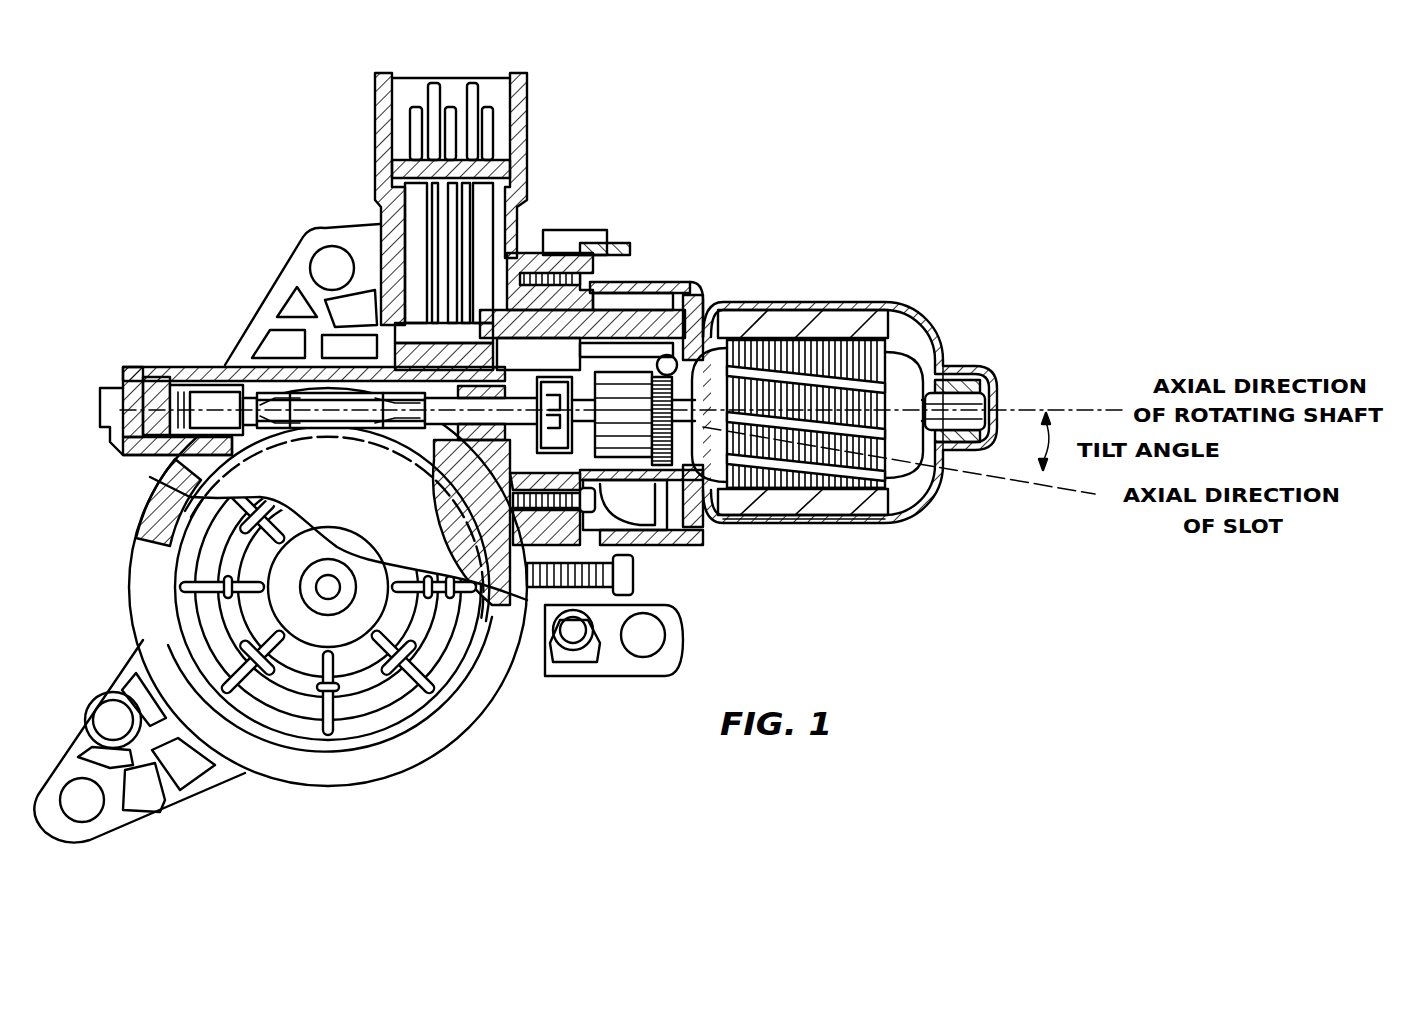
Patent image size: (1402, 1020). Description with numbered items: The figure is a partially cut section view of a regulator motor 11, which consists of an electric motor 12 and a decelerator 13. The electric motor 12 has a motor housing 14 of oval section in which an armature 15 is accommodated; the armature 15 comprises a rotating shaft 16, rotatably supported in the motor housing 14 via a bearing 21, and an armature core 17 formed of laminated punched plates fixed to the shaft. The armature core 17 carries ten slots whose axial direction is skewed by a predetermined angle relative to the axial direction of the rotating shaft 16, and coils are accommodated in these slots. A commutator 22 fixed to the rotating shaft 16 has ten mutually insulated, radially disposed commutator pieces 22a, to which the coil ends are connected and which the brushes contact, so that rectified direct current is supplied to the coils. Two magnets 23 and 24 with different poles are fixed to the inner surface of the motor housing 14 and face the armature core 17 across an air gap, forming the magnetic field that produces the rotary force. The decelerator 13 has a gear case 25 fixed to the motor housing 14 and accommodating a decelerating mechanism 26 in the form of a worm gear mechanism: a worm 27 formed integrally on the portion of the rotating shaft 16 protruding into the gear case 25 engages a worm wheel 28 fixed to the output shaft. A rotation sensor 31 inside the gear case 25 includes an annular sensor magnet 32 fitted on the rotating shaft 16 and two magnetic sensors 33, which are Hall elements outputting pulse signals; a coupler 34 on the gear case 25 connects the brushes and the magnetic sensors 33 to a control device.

The regulator motor 11 is at (806, 158).
The electric motor 12 is at (841, 290).
The decelerator 13 is at (292, 232).
The motor housing 14 is at (798, 526).
The armature 15 is at (917, 484).
The rotating shaft 16 is at (522, 352).
The armature core 17 is at (890, 400).
The bearing 21 is at (995, 401).
The commutator 22 is at (624, 476).
The commutator pieces 22a is at (695, 468).
The magnet 23 is at (800, 332).
The magnet 24 is at (823, 500).
The gear case 25 is at (162, 366).
The decelerating mechanism 26 is at (306, 444).
The worm 27 is at (305, 405).
The worm wheel 28 is at (428, 550).
The rotation sensor 31 is at (515, 452).
The sensor magnet 32 is at (580, 645).
The magnetic sensors 33 is at (557, 352).
The coupler 34 is at (503, 88).